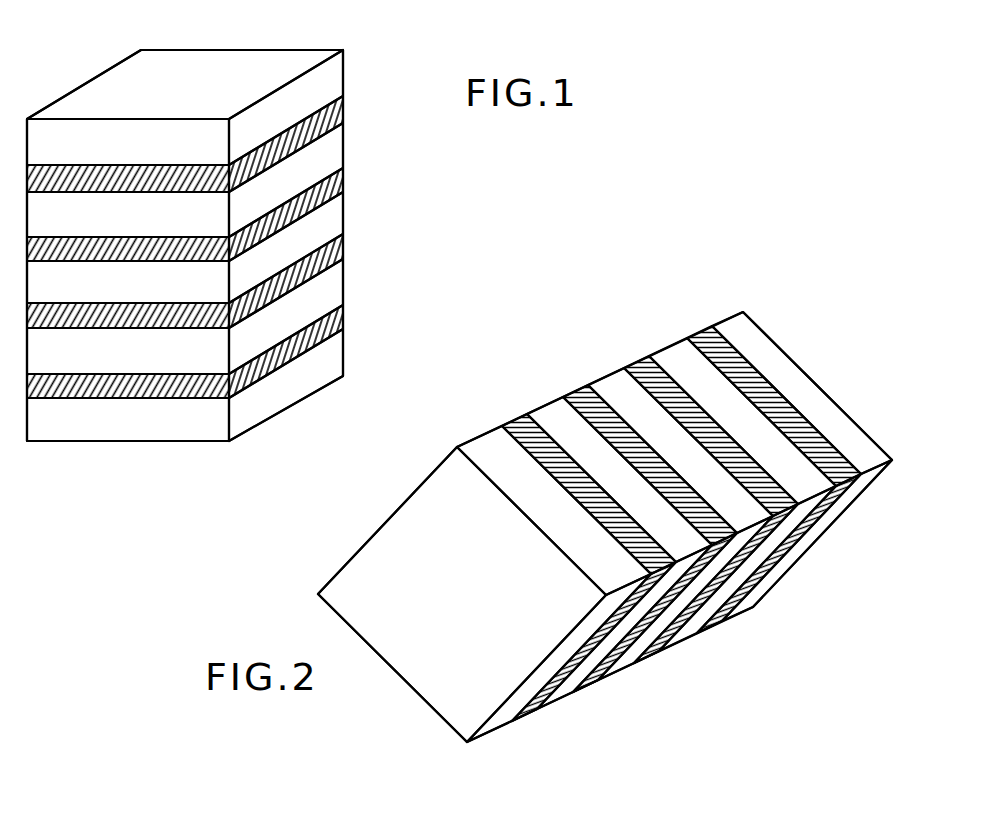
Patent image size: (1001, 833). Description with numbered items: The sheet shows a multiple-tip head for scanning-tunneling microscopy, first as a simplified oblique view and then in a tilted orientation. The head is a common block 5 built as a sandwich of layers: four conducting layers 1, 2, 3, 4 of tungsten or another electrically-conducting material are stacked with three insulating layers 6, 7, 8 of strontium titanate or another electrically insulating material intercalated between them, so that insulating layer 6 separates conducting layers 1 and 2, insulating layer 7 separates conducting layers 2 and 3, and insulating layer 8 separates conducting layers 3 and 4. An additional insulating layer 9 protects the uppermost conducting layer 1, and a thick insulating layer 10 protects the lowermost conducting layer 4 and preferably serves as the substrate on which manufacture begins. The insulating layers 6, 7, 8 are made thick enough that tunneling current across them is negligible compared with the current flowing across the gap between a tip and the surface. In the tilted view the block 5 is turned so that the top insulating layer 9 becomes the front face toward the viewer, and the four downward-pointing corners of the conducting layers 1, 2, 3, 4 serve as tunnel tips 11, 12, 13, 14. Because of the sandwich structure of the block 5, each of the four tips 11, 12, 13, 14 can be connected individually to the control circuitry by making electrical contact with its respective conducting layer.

In FIG. 1, the block 5 is at (120, 42).
In FIG. 2, the block 5 is at (600, 352).
In FIG. 1, the insulating layer 9 is at (330, 78).
In FIG. 2, the insulating layer 9 is at (492, 457).
In FIG. 1, the conducting layer 1 is at (335, 116).
In FIG. 2, the conducting layer 1 is at (502, 424).
In FIG. 1, the insulating layer 6 is at (333, 152).
In FIG. 2, the insulating layer 6 is at (619, 553).
In FIG. 1, the conducting layer 2 is at (343, 188).
In FIG. 2, the conducting layer 2 is at (574, 397).
In FIG. 1, the insulating layer 7 is at (333, 222).
In FIG. 2, the insulating layer 7 is at (680, 524).
In FIG. 1, the conducting layer 3 is at (340, 257).
In FIG. 2, the conducting layer 3 is at (630, 370).
In FIG. 1, the insulating layer 8 is at (337, 285).
In FIG. 2, the insulating layer 8 is at (742, 494).
In FIG. 1, the conducting layer 4 is at (337, 318).
In FIG. 2, the conducting layer 4 is at (695, 340).
In FIG. 1, the insulating layer 10 is at (335, 357).
In FIG. 2, the insulating layer 10 is at (758, 352).
In FIG. 2, the tunnel tip 11 is at (515, 738).
In FIG. 2, the tunnel tip 12 is at (574, 712).
In FIG. 2, the tunnel tip 13 is at (638, 682).
In FIG. 2, the tunnel tip 14 is at (702, 640).